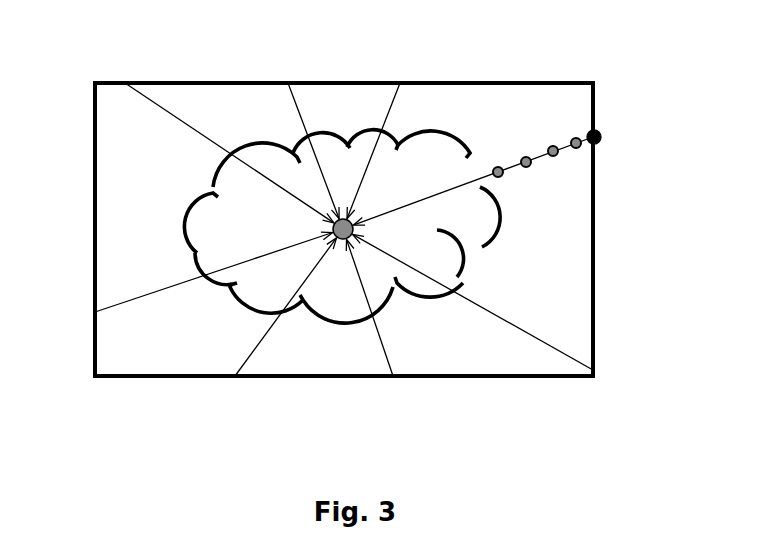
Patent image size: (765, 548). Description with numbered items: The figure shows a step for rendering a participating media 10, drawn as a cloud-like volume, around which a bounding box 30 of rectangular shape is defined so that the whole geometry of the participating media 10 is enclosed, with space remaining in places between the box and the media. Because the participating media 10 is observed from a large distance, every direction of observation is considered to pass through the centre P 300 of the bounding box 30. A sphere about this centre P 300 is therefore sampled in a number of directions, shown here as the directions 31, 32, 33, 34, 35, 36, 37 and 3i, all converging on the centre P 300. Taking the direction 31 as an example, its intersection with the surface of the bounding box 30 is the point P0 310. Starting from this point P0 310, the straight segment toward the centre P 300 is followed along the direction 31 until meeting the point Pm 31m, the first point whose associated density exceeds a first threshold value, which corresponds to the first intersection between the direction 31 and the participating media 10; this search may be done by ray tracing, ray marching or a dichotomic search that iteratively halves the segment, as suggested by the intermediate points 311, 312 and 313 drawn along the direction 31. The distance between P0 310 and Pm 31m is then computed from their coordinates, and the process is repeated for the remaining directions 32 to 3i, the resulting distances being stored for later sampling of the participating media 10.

The bounding box 30 is at (95, 148).
The participating media 10 is at (197, 220).
The centre P 300 is at (330, 218).
The direction 36 is at (182, 118).
The direction 37 is at (297, 105).
The direction 3i is at (390, 108).
The direction 31 is at (467, 188).
The direction 32 is at (508, 333).
The direction 33 is at (383, 352).
The direction 34 is at (253, 352).
The direction 35 is at (152, 295).
The point Pm 31m is at (497, 167).
The sample point 311 is at (575, 150).
The sample point 312 is at (553, 147).
The sample point 313 is at (526, 158).
The point P0 310 is at (600, 139).